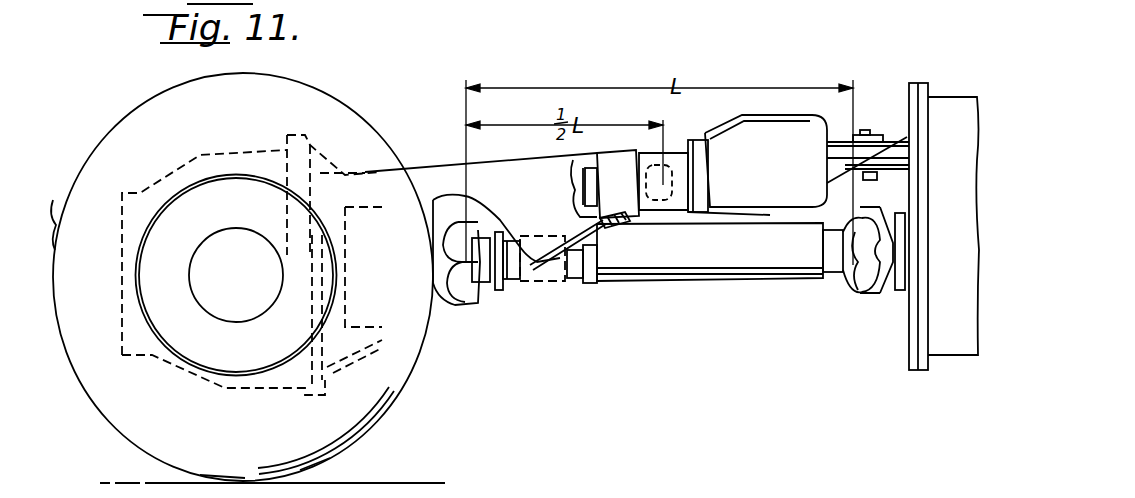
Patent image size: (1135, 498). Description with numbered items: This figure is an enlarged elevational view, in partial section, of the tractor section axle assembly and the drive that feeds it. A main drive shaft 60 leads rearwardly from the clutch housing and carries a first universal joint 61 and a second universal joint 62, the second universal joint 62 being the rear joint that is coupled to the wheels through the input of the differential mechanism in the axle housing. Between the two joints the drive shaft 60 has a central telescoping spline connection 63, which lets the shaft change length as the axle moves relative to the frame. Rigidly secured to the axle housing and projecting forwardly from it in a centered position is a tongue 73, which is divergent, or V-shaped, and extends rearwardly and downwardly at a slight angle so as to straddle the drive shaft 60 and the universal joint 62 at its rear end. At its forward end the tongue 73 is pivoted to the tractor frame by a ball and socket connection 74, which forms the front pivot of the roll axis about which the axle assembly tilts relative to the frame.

The main drive shaft 60 is at (612, 280).
The first universal joint 61 is at (850, 282).
The second universal joint 62 is at (470, 297).
The central telescoping spline connection 63 is at (532, 292).
The tongue 73 is at (415, 166).
The ball and socket connection 74 is at (668, 158).